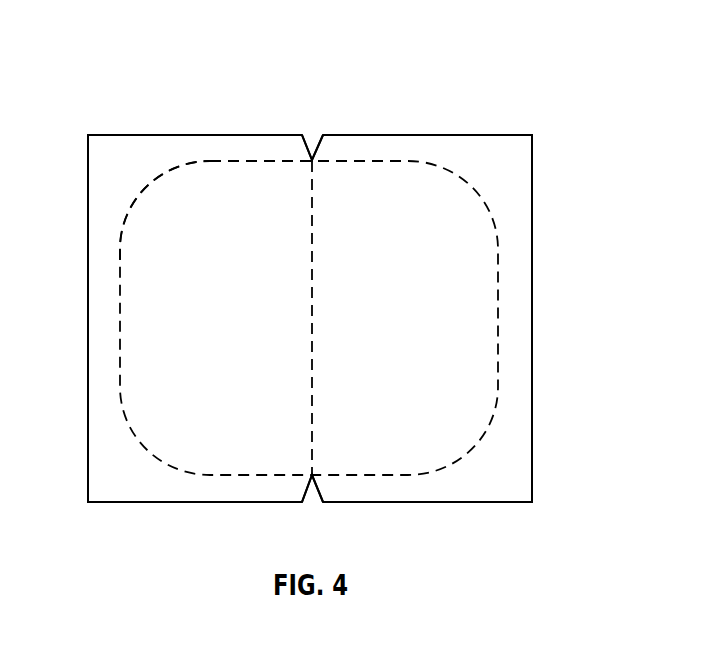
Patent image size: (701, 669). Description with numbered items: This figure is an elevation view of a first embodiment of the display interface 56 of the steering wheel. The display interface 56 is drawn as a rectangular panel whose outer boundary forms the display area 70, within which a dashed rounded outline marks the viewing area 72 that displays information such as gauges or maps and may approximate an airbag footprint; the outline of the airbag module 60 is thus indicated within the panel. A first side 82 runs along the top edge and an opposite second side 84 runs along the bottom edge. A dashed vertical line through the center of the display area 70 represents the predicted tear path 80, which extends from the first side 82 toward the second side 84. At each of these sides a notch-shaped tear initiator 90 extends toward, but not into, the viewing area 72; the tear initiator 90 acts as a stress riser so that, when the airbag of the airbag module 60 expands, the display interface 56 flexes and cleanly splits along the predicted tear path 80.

The display interface 56 is at (543, 349).
The airbag module 60 is at (490, 225).
The display area 70 is at (127, 150).
The viewing area 72 is at (152, 237).
The predicted tear path 80 is at (313, 344).
The first side 82 is at (412, 135).
The second side 84 is at (195, 502).
The tear initiator 90 is at (312, 130).